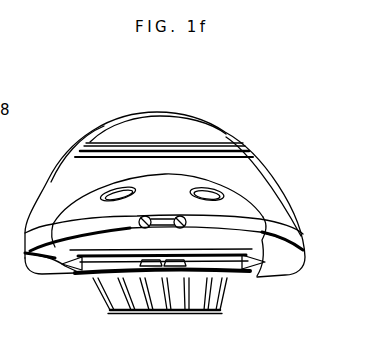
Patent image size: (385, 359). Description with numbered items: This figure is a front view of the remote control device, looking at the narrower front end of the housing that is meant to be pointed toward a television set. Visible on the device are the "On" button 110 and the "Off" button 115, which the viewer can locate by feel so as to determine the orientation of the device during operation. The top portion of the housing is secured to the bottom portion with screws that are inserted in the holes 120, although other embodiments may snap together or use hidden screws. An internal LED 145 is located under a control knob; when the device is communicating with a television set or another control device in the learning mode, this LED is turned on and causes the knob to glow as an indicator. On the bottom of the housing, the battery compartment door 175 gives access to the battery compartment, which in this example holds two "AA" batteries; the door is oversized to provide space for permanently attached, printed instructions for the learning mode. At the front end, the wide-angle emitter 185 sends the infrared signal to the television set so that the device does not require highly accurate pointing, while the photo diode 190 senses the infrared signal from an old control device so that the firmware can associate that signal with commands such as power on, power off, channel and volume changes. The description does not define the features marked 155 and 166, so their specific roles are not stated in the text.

The "On" button 110 is at (200, 267).
The "Off" button 115 is at (115, 272).
The holes 120 is at (143, 182).
The internal LED 145 is at (132, 315).
The housing body 155 is at (235, 248).
The bottom rim 166 is at (197, 317).
The battery compartment door 175 is at (160, 140).
The wide-angle emitter 185 is at (193, 232).
The photo diode 190 is at (128, 220).